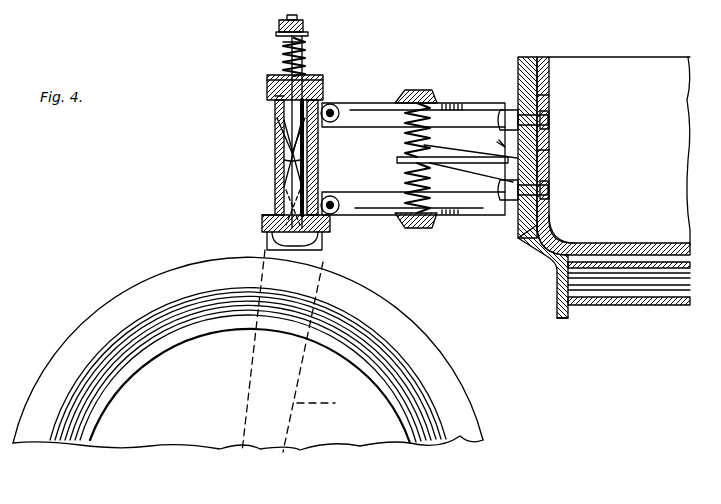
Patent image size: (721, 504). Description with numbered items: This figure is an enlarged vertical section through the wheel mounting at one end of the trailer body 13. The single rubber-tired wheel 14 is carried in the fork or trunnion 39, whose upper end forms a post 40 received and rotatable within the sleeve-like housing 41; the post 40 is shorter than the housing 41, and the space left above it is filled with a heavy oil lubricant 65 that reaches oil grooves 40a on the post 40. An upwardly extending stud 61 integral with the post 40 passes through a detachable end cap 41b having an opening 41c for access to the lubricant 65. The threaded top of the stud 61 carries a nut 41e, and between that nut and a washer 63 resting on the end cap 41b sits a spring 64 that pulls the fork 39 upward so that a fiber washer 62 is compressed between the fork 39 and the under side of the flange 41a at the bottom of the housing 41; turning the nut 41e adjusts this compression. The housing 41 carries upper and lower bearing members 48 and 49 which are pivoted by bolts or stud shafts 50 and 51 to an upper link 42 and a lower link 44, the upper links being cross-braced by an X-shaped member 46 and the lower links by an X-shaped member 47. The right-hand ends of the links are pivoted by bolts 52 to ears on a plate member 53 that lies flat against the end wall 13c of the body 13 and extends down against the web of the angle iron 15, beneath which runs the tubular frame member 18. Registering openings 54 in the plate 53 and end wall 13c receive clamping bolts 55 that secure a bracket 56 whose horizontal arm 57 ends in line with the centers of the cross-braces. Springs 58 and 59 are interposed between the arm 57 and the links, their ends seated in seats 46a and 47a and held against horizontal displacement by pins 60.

The trailer body 13 is at (613, 156).
The end wall 13c is at (552, 228).
The wheel 14 is at (318, 448).
The angle iron 15 is at (570, 316).
The tubular frame member 18 is at (684, 304).
The fork or trunnion 39 is at (262, 250).
The post 40 is at (284, 170).
The oil grooves 40a is at (282, 160).
The housing 41 is at (276, 134).
The flange 41a is at (268, 215).
The end cap 41b is at (276, 96).
The opening 41c is at (270, 77).
The nut 41e is at (279, 29).
The upper link 42 is at (348, 116).
The lower link 44 is at (398, 172).
The X-shaped member 46 is at (442, 105).
The spring seat 46a is at (428, 96).
The X-shaped member 47 is at (440, 216).
The spring seat 47a is at (412, 228).
The bearing member 48 is at (333, 104).
The bearing member 49 is at (340, 213).
The bolt or stud shaft 50 is at (345, 112).
The bolt or stud shaft 51 is at (336, 197).
The bolt 52 is at (503, 225).
The plate member 53 is at (534, 258).
The registering openings 54 is at (548, 92).
The clamping bolt 55 is at (550, 125).
The bracket 56 is at (522, 105).
The arm 57 is at (497, 140).
The spring 58 is at (434, 142).
The spring 59 is at (436, 182).
The pin 60 is at (418, 104).
The stud 61 is at (287, 62).
The washer 62 is at (265, 226).
The washer 63 is at (316, 92).
The spring 64 is at (286, 44).
The lubricant 65 is at (281, 116).